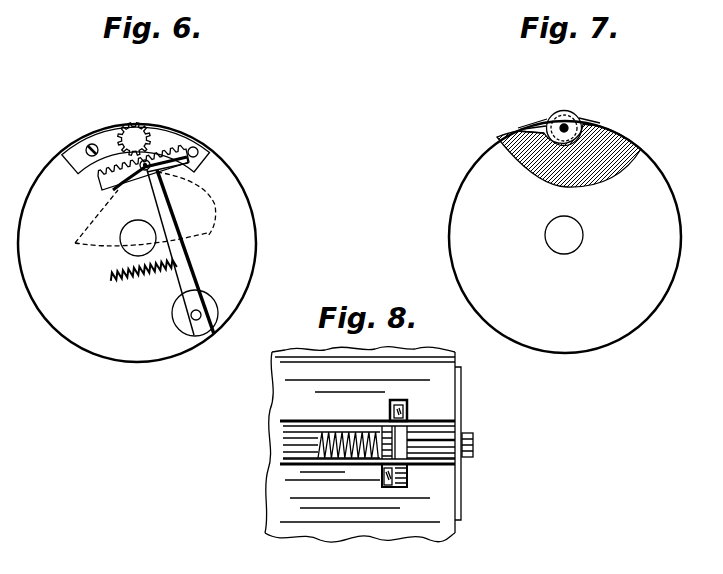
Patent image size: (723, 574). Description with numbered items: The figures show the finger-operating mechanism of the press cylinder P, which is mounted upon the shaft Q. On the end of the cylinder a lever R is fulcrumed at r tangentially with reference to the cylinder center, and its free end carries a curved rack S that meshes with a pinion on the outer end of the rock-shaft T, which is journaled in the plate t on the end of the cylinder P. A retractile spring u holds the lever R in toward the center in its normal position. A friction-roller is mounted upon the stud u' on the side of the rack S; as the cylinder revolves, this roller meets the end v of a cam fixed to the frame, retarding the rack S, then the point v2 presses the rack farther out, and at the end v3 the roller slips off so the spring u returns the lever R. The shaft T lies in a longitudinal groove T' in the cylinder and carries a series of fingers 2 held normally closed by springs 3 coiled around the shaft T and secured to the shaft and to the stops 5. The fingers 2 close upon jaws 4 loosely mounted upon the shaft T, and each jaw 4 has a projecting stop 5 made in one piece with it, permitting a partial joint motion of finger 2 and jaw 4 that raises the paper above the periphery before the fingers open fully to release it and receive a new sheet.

In FIG. 6, the cylinder P is at (137, 243).
In FIG. 7, the cylinder P is at (565, 237).
In FIG. 8, the cylinder P is at (360, 445).
In FIG. 6, the cylinder-shaft Q is at (138, 238).
In FIG. 7, the cylinder-shaft Q is at (564, 235).
In FIG. 6, the plate t is at (214, 153).
In FIG. 8, the plate t is at (462, 410).
In FIG. 6, the curved rack S is at (136, 138).
In FIG. 6, the end of the cam v is at (151, 202).
In FIG. 6, the pawl arm v' is at (213, 195).
In FIG. 6, the point of the cam v2 is at (212, 217).
In FIG. 6, the end of the cam v3 is at (118, 183).
In FIG. 6, the retractile spring u is at (144, 279).
In FIG. 6, the stud u' is at (130, 194).
In FIG. 6, the lever R is at (200, 272).
In FIG. 6, the fulcrum r is at (218, 336).
In FIG. 7, the rock-shaft T is at (573, 117).
In FIG. 8, the rock-shaft T is at (451, 463).
In FIG. 8, the longitudinal groove T' is at (336, 462).
In FIG. 7, the finger 2 is at (582, 117).
In FIG. 8, the finger 2 is at (407, 412).
In FIG. 8, the spring 3 is at (282, 430).
In FIG. 7, the jaw 4 is at (601, 124).
In FIG. 7, the stop 5 is at (532, 118).
In FIG. 8, the stop 5 is at (382, 495).